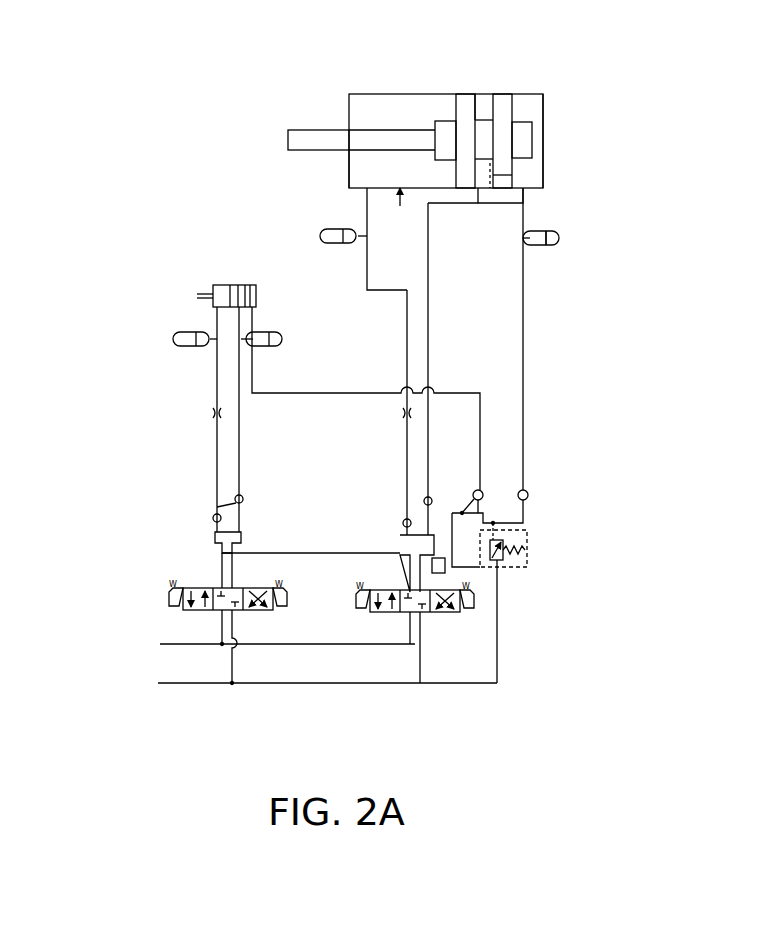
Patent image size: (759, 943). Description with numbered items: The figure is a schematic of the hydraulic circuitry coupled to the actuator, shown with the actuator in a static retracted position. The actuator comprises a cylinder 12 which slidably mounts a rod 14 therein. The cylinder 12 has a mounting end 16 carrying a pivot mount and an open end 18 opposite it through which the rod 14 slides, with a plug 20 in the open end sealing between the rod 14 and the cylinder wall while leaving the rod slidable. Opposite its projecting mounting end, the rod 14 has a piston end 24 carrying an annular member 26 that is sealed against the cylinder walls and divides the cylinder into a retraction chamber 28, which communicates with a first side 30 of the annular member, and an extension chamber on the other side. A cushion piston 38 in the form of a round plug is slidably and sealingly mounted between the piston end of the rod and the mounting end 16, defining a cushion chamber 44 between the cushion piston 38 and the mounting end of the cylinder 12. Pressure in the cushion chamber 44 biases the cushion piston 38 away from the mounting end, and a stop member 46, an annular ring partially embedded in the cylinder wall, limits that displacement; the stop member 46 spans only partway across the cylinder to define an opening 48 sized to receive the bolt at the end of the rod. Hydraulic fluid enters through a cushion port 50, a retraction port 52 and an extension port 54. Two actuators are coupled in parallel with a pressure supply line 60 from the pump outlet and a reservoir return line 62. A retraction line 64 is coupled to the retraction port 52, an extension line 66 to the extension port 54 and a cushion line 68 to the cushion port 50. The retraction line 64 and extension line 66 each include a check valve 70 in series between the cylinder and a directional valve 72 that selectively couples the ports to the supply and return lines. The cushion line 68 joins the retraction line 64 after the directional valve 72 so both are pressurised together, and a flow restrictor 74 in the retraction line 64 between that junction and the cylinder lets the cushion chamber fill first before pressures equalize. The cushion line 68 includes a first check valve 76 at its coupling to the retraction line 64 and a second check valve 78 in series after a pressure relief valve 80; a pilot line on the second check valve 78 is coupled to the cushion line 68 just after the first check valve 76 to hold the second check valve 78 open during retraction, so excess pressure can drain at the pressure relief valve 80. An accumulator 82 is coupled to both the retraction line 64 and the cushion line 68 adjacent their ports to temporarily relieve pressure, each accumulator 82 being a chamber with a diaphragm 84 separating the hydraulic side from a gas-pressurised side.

The cylinder 12 is at (433, 94).
The rod 14 is at (333, 140).
The mounting end 16 is at (543, 145).
The open end 18 is at (349, 170).
The plug 20 is at (288, 133).
The piston end 24 is at (483, 124).
The annular member 26 is at (463, 103).
The retraction chamber 28 is at (399, 212).
The first side 30 is at (489, 116).
The cushion piston 38 is at (505, 175).
The cushion chamber 44 is at (537, 116).
The stop member 46 is at (493, 107).
The opening 48 is at (490, 163).
The cushion port 50 is at (523, 203).
The retraction port 52 is at (367, 197).
The extension port 54 is at (478, 205).
The pressure supply line 60 is at (175, 644).
The reservoir return line 62 is at (195, 684).
The retraction line 64 is at (407, 345).
The extension line 66 is at (428, 270).
The cushion line 68 is at (523, 345).
The check valve 70 is at (424, 501).
The directional valve 72 is at (435, 612).
The flow restrictor 74 is at (403, 413).
The first check valve 76 is at (445, 572).
The second check valve 78 is at (528, 498).
The pressure relief valve 80 is at (523, 541).
The accumulator 82 is at (327, 236).
The diaphragm 84 is at (556, 245).